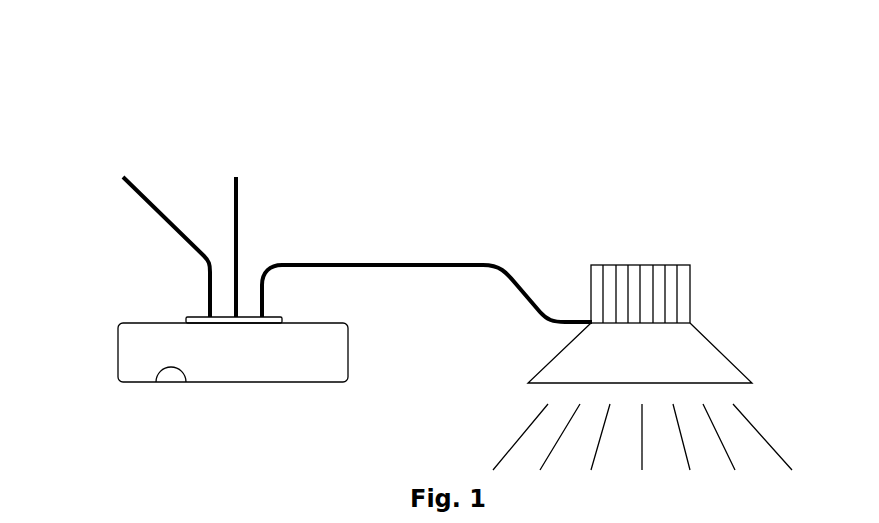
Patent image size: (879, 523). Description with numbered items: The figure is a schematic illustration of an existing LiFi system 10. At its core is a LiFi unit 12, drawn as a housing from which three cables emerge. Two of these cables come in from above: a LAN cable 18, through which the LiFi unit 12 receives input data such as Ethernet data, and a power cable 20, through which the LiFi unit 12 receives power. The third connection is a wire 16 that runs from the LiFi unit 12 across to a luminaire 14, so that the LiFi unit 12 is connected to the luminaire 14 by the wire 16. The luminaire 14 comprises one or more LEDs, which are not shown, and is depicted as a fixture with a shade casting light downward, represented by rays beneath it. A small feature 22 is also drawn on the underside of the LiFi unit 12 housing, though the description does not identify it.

The LiFi system 10 is at (252, 104).
The LiFi unit 12 is at (118, 358).
The luminaire 14 is at (690, 300).
The wire 16 is at (480, 267).
The LAN cable 18 is at (172, 222).
The power cable 20 is at (233, 213).
The notch 22 is at (163, 382).